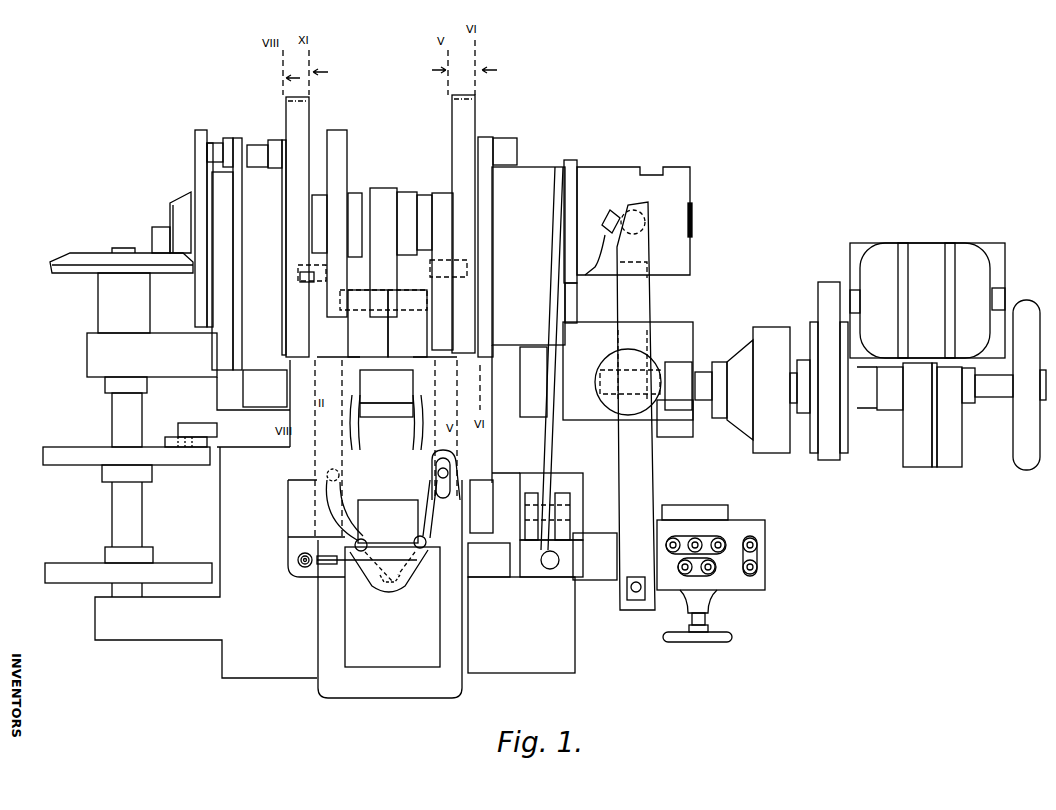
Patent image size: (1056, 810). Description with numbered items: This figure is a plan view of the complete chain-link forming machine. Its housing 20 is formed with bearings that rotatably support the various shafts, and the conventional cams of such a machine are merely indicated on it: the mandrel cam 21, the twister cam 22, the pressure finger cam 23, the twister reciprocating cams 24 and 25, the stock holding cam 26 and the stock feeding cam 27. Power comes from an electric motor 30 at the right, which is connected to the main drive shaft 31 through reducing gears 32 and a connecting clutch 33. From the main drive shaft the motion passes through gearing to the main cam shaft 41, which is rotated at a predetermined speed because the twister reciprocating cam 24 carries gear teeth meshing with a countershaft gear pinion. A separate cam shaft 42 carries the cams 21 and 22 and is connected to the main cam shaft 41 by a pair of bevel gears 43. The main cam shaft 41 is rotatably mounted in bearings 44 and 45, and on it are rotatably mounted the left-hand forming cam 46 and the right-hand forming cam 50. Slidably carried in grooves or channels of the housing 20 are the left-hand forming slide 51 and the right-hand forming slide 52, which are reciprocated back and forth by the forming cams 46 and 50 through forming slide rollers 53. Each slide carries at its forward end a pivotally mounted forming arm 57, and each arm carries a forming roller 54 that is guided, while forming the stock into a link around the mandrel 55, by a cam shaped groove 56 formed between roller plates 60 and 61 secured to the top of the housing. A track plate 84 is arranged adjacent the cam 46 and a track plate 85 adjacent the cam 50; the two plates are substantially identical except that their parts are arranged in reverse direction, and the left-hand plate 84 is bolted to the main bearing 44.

The housing 20 is at (278, 678).
The mandrel cam 21 is at (77, 580).
The twister cam 22 is at (87, 440).
The pressure finger cam 23 is at (197, 134).
The twister reciprocating cam 24 is at (341, 147).
The twister reciprocating cam 25 is at (383, 194).
The stock holding cam 26 is at (576, 170).
The stock feeding cam 27 is at (685, 172).
The electric motor 30 is at (950, 246).
The main drive shaft 31 is at (694, 375).
The reducing gears 32 is at (827, 333).
The connecting clutch 33 is at (752, 335).
The main cam shaft 41 is at (170, 213).
The cam shaft 42 is at (120, 413).
The bevel gears 43 is at (142, 257).
The bearing 44 is at (223, 185).
The bearing 45 is at (530, 178).
The left-hand forming cam 46 is at (302, 107).
The right-hand forming cam 50 is at (470, 106).
The left-hand forming slide 51 is at (328, 347).
The right-hand forming slide 52 is at (442, 338).
The forming slide roller 53 is at (297, 267).
The forming roller 54 is at (415, 539).
The mandrel 55 is at (380, 587).
The cam shaped groove 56 is at (397, 586).
The forming arm 57 is at (320, 505).
The roller plate 60 is at (392, 506).
The roller plate 61 is at (427, 636).
The track plate 84 is at (281, 143).
The track plate 85 is at (490, 146).